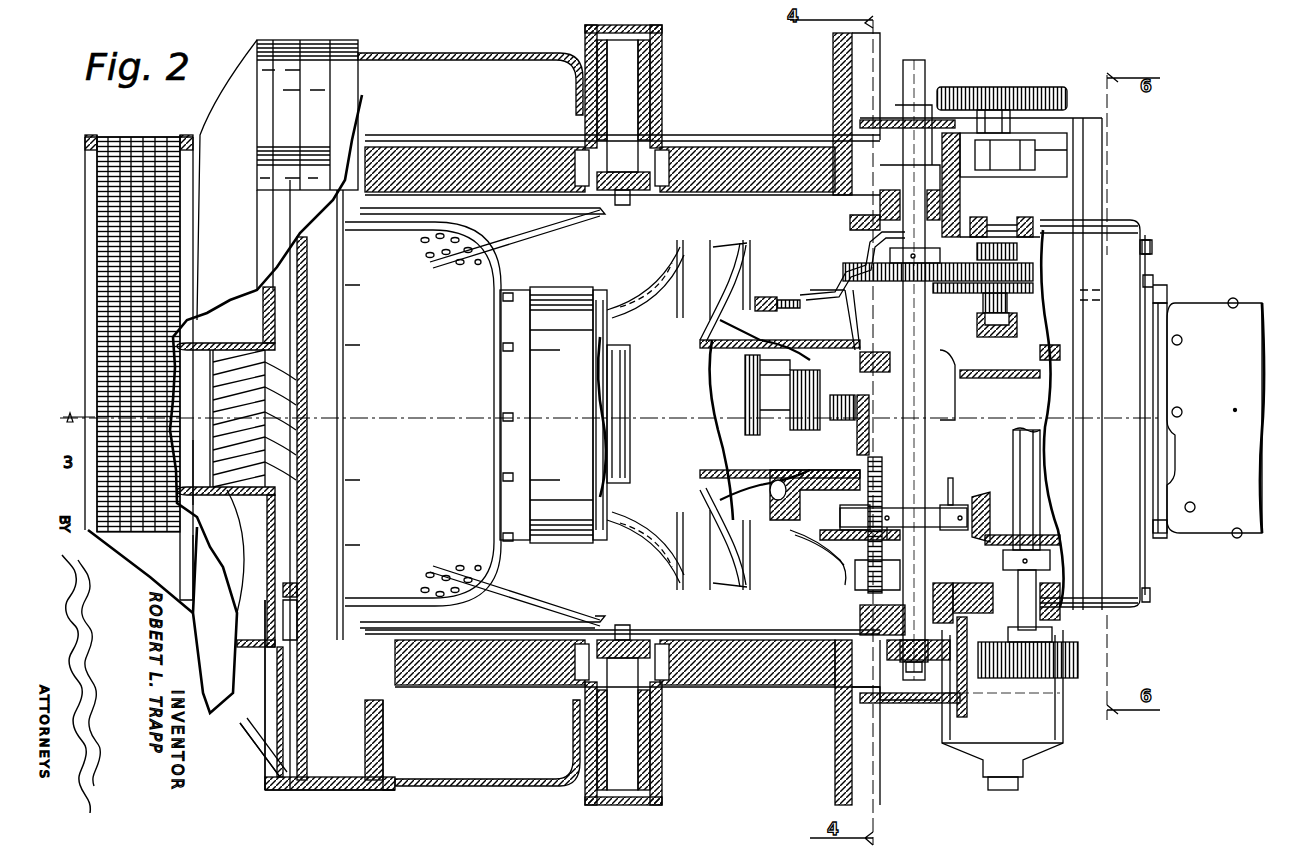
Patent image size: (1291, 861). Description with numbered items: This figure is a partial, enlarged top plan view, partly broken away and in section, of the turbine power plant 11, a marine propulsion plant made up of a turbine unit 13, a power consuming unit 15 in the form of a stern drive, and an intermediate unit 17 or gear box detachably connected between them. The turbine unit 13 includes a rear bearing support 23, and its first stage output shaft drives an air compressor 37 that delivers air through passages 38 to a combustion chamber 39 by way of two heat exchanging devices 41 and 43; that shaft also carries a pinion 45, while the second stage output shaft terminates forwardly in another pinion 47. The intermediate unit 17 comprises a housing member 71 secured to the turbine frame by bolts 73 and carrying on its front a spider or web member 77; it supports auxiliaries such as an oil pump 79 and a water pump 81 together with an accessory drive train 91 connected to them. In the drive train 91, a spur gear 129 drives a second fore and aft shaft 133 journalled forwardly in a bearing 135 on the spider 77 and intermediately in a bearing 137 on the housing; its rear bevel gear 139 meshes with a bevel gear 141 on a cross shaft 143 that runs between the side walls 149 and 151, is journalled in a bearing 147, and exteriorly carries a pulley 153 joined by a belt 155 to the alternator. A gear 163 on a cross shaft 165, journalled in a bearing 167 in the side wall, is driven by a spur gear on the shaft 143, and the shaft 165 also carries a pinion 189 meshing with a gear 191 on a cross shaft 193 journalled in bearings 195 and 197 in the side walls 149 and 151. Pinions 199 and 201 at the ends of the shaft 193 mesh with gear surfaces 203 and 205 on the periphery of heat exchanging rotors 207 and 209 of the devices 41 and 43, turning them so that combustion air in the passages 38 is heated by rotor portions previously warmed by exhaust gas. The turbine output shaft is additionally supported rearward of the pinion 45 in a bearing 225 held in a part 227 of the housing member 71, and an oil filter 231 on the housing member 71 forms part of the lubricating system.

The turbine power plant 11 is at (686, 832).
The turbine unit 13 is at (398, 800).
The power consuming unit 15 is at (1232, 328).
The intermediate unit 17 is at (1095, 275).
The rear bearing support 23 is at (845, 280).
The air compressor 37 is at (300, 420).
The passages 38 is at (455, 72).
The combustion chamber 39 is at (424, 466).
The heat exchanging device 41 is at (512, 168).
The heat exchanging device 43 is at (540, 670).
The pinion 45 is at (835, 478).
The pinion 47 is at (795, 405).
The housing member 71 is at (950, 580).
The bolts 73 is at (1152, 245).
The spider or web member 77 is at (857, 305).
The oil pump 79 is at (1030, 175).
The water pump 81 is at (1050, 135).
The accessory gear train 91 is at (910, 360).
The spur gear 129 is at (868, 470).
The second fore and aft shaft 133 is at (915, 515).
The bearing 135 is at (830, 550).
The bearing 137 is at (955, 495).
The bevel gear 139 is at (989, 509).
The bevel gear 141 is at (1045, 530).
The cross shaft 143 is at (1030, 480).
The bearing 147 is at (1006, 595).
The side wall 149 is at (952, 225).
The side wall 151 is at (965, 605).
The pulley 153 is at (1060, 645).
The belt 155 is at (1078, 665).
The gear 163 is at (1040, 300).
The cross shaft 165 is at (985, 326).
The bearing 167 is at (1010, 235).
The pinion 189 is at (1020, 270).
The gear 191 is at (880, 270).
The cross shaft 193 is at (870, 580).
The bearing 195 is at (858, 232).
The bearing 197 is at (880, 615).
The pinion 199 is at (930, 200).
The pinion 201 is at (945, 703).
The gear surface 203 is at (850, 150).
The gear surface 205 is at (860, 680).
The heat exchanging wheel 207 is at (735, 144).
The heat exchanging wheel 209 is at (770, 670).
The bearing 225 is at (1010, 405).
The part of housing member 227 is at (875, 372).
The oil filter 231 is at (1060, 740).